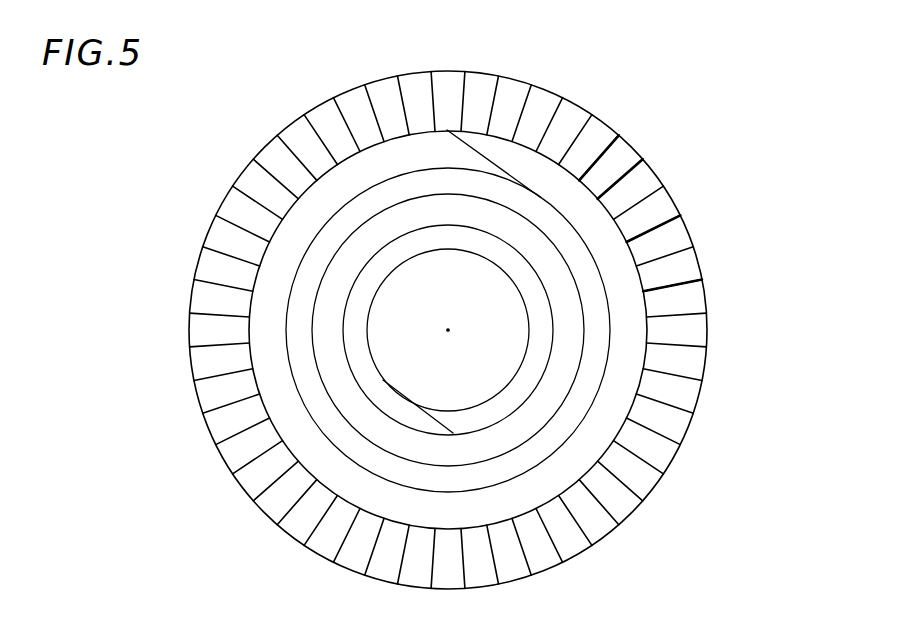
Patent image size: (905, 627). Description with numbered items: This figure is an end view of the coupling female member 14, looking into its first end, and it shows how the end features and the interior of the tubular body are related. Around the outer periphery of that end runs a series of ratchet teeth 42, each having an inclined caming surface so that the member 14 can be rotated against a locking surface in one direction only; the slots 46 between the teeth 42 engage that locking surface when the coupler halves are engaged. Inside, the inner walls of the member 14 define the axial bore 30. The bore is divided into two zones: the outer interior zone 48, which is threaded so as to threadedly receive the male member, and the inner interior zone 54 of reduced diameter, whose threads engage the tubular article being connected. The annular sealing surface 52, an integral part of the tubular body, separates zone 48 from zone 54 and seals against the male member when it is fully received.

The coupling female member 14 is at (673, 463).
The axial bore 30 is at (448, 329).
The ratchet teeth 42 is at (512, 105).
The slots 46 is at (672, 242).
The interior zone 48 is at (293, 385).
The sealing surface 52 is at (338, 228).
The interior zone of reduced diameter 54 is at (370, 288).